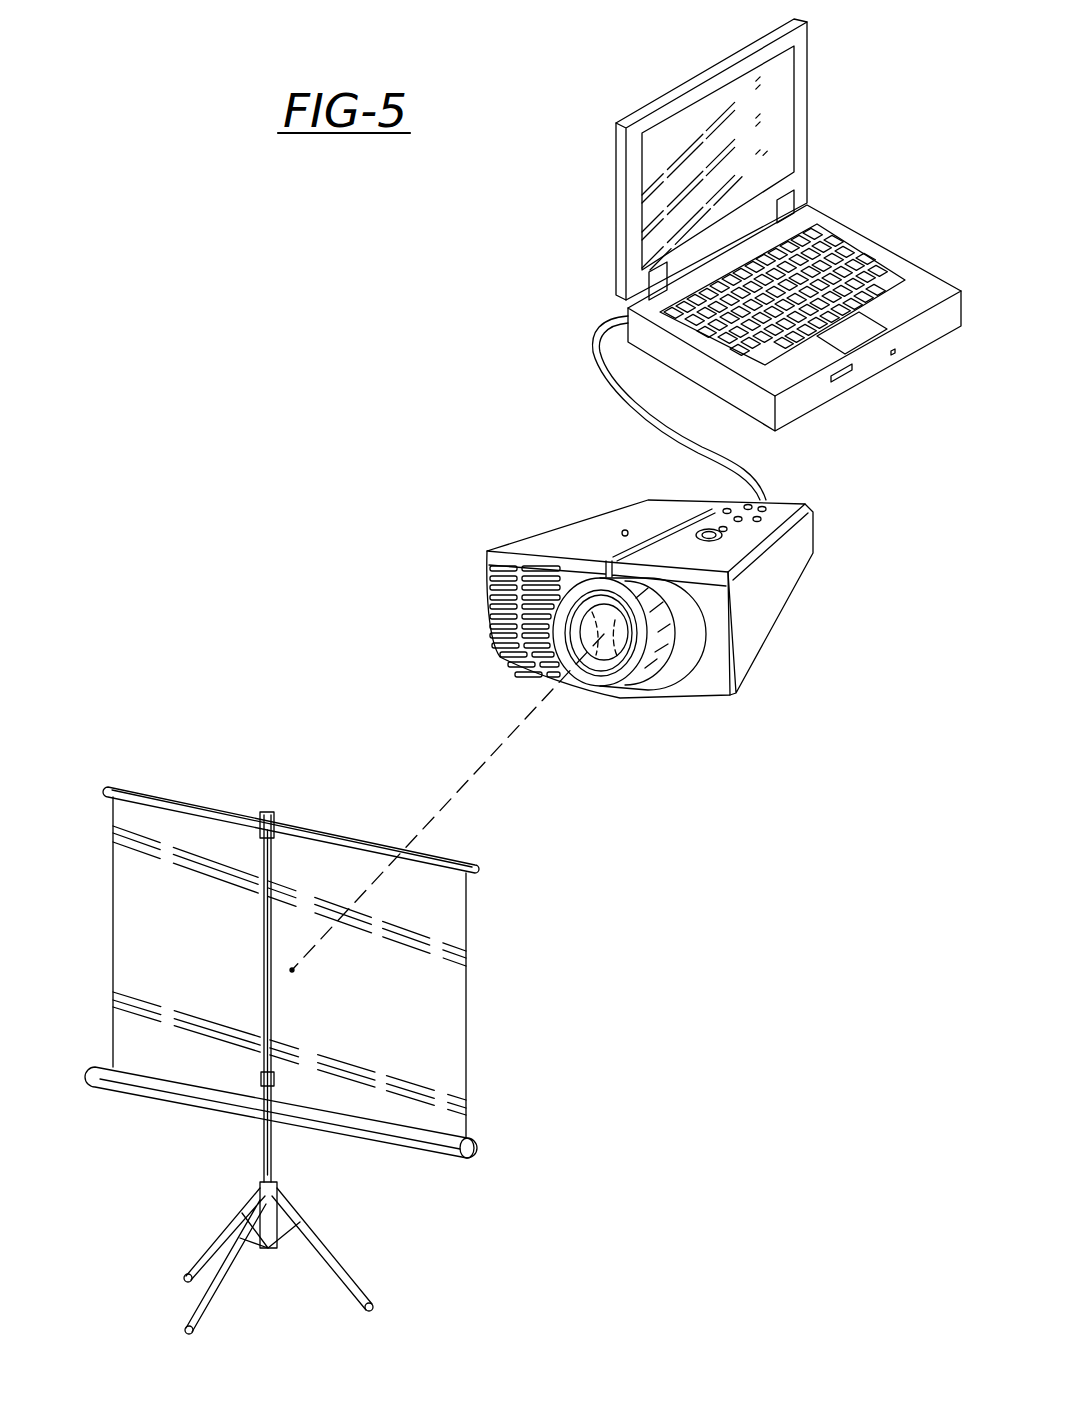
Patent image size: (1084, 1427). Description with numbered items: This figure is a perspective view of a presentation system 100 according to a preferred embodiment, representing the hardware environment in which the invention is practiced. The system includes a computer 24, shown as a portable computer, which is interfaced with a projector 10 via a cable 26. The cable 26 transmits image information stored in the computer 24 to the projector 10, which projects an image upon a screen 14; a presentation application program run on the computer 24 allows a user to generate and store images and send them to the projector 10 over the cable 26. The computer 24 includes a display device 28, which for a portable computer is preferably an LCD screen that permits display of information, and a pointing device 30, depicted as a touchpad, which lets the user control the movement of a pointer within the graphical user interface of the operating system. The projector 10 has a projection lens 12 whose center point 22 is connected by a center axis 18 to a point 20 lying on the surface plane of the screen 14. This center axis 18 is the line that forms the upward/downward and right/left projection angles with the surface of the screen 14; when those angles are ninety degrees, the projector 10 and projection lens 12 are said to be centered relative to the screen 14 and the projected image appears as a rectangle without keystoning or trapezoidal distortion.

The presentation system 100 is at (367, 366).
The projector 10 is at (573, 533).
The projection lens 12 is at (673, 637).
The screen 14 is at (237, 843).
The center axis 18 is at (510, 737).
The point 20 is at (292, 970).
The center point 22 is at (620, 647).
The computer 24 is at (894, 252).
The cable 26 is at (828, 243).
The display device 28 is at (782, 106).
The pointing device 30 is at (858, 333).